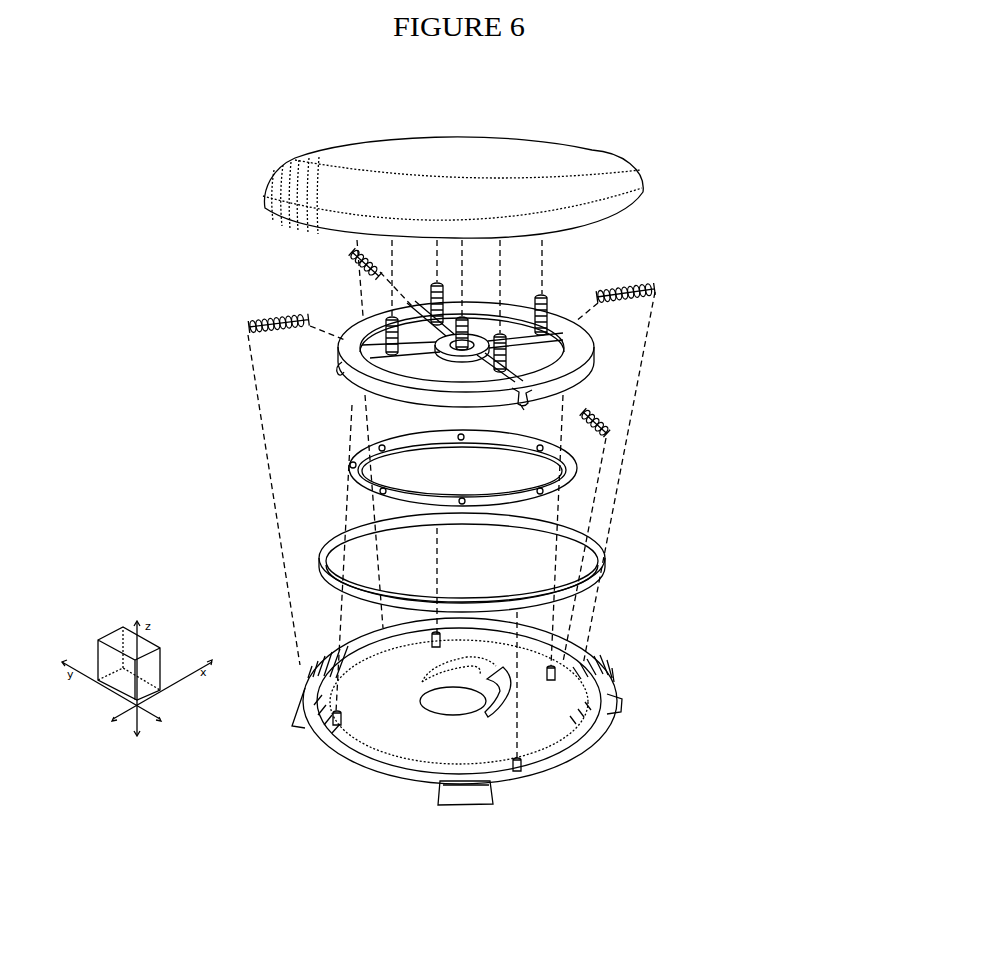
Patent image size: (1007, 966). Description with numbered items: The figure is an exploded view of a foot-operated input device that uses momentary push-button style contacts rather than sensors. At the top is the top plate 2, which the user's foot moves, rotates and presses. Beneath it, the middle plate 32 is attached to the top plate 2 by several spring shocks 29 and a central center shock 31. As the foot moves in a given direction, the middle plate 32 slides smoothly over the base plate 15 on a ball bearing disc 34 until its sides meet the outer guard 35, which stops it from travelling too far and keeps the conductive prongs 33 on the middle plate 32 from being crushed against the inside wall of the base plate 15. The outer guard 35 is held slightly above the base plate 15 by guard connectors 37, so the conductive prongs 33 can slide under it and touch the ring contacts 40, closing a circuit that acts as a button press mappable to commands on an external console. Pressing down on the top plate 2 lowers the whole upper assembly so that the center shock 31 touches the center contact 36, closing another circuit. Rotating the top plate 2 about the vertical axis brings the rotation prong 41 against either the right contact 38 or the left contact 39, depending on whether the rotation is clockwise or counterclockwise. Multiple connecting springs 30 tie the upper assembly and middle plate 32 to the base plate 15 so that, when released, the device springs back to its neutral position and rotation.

The top plate 2 is at (626, 168).
The spring shocks 29 is at (553, 296).
The connecting springs 30 is at (663, 285).
The center shock 31 is at (448, 332).
The middle plate 32 is at (595, 362).
The conductive prongs 33 is at (516, 408).
The rotation prong 41 is at (547, 348).
The ball bearing disc 34 is at (571, 482).
The outer guard 35 is at (607, 557).
The center contact 36 is at (444, 698).
The guard connectors 37 is at (560, 671).
The right contact 38 is at (514, 690).
The left contact 39 is at (481, 672).
The ring contacts 40 is at (584, 682).
The base plate 15 is at (373, 751).